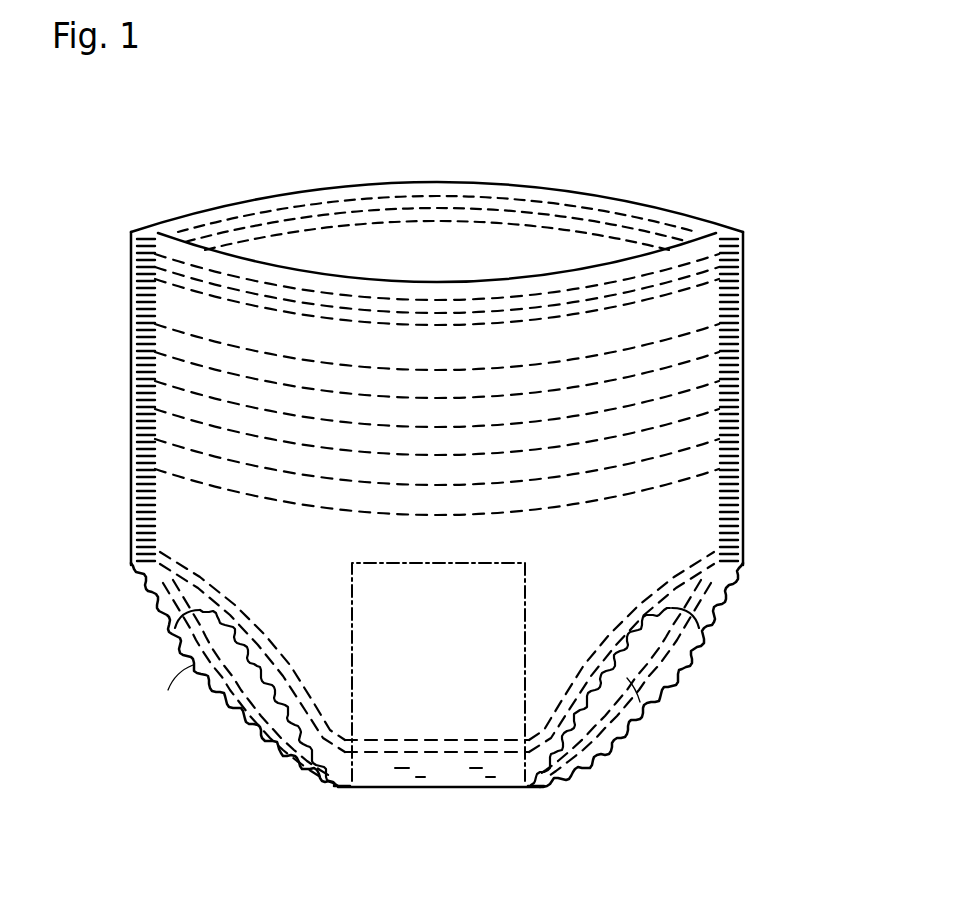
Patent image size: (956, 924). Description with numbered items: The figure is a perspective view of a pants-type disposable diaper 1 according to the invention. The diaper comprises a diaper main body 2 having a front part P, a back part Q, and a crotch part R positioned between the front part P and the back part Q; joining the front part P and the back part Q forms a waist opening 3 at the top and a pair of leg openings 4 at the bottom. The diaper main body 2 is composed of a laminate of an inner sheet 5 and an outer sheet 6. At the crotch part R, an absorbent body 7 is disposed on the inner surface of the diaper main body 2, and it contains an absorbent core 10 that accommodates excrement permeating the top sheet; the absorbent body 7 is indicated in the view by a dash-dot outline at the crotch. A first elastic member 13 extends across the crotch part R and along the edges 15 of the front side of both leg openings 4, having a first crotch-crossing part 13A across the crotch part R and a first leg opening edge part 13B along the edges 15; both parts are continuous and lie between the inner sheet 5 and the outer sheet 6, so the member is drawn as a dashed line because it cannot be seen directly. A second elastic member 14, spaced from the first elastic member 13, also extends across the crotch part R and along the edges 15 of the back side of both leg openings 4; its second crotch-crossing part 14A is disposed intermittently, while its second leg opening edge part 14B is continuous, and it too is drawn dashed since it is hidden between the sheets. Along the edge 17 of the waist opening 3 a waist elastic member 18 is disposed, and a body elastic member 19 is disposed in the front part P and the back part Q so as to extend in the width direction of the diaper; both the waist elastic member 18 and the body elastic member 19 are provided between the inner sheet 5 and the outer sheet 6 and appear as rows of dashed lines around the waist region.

The pants-type disposable diaper 1 is at (748, 196).
The diaper main body 2 is at (657, 209).
The waist opening 3 is at (462, 247).
The leg openings 4 is at (263, 700).
The inner sheet 5 is at (322, 257).
The outer sheet 6 is at (193, 525).
The absorbent body 7 is at (438, 672).
The absorbent core 10 is at (458, 722).
The first elastic member 13 is at (657, 820).
The first crotch-crossing part 13A is at (497, 745).
The first leg opening edge part 13B is at (601, 725).
The second elastic member 14 is at (222, 818).
The second crotch-crossing part 14A is at (405, 791).
The second leg opening edge part 14B is at (280, 758).
The edges of the leg openings 15 is at (205, 608).
The edge of the waist opening 17 is at (548, 185).
The waist elastic member 18 is at (197, 207).
The body elastic member 19 is at (662, 340).
The front part P is at (673, 525).
The back part Q is at (372, 182).
The crotch part R is at (473, 790).